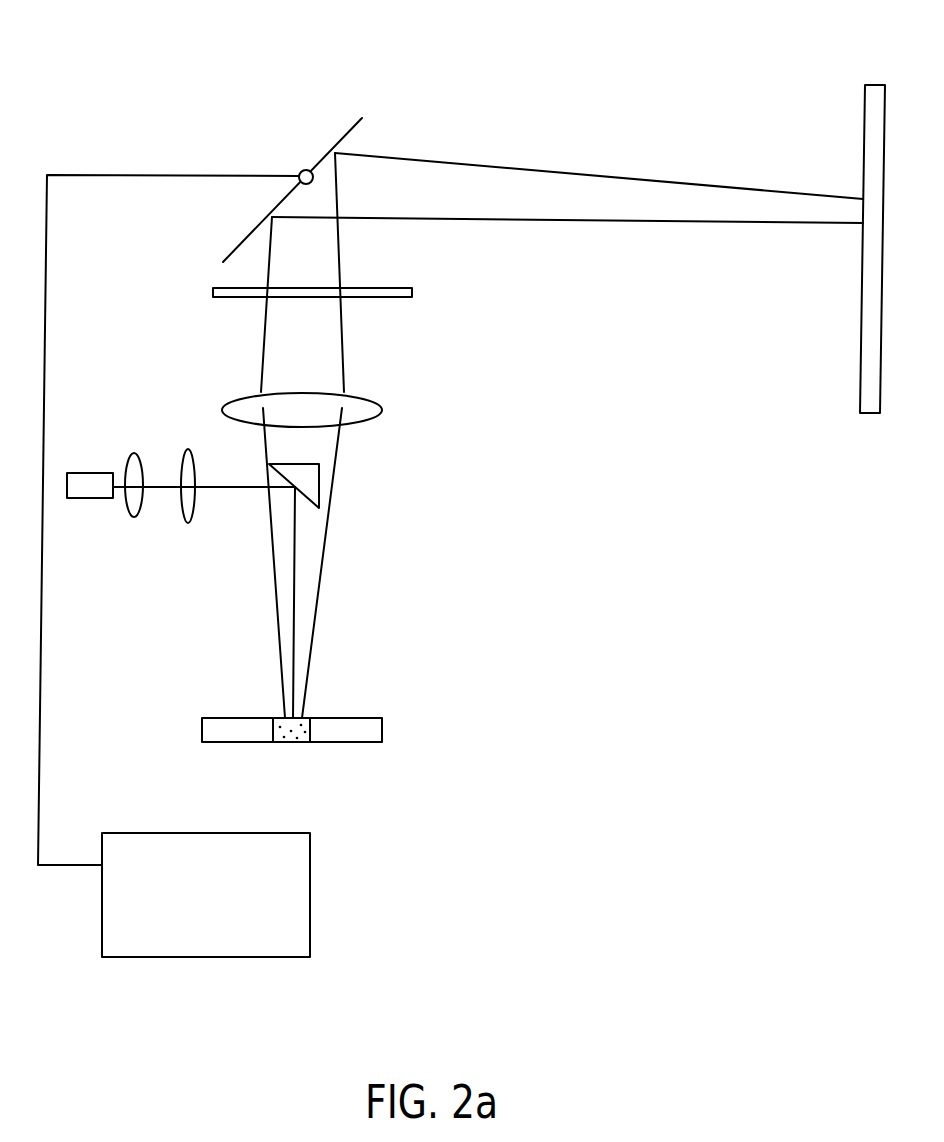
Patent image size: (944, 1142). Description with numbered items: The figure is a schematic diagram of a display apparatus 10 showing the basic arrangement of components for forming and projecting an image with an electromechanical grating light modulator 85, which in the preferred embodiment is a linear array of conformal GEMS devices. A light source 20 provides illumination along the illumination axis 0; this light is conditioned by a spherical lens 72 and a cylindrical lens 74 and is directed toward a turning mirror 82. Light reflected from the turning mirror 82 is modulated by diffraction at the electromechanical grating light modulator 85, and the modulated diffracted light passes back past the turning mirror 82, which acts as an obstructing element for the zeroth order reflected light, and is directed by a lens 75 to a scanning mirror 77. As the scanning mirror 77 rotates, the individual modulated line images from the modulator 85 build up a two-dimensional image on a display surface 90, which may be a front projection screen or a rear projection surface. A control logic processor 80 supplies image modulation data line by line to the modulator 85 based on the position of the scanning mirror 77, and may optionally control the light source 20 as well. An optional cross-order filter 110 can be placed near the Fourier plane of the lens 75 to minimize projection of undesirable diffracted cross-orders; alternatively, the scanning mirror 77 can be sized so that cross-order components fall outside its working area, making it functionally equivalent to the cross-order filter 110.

The display apparatus 10 is at (484, 76).
The scanning mirror 77 is at (320, 160).
The cross-order filter 110 is at (412, 291).
The lens 75 is at (382, 410).
The turning mirror 82 is at (319, 483).
The light source 20 is at (82, 472).
The spherical lens 72 is at (133, 518).
The cylindrical lens 74 is at (188, 525).
The illumination axis 0 is at (250, 488).
The electromechanical grating light modulator 85 is at (382, 730).
The display surface 90 is at (860, 382).
The control logic processor 80 is at (310, 898).